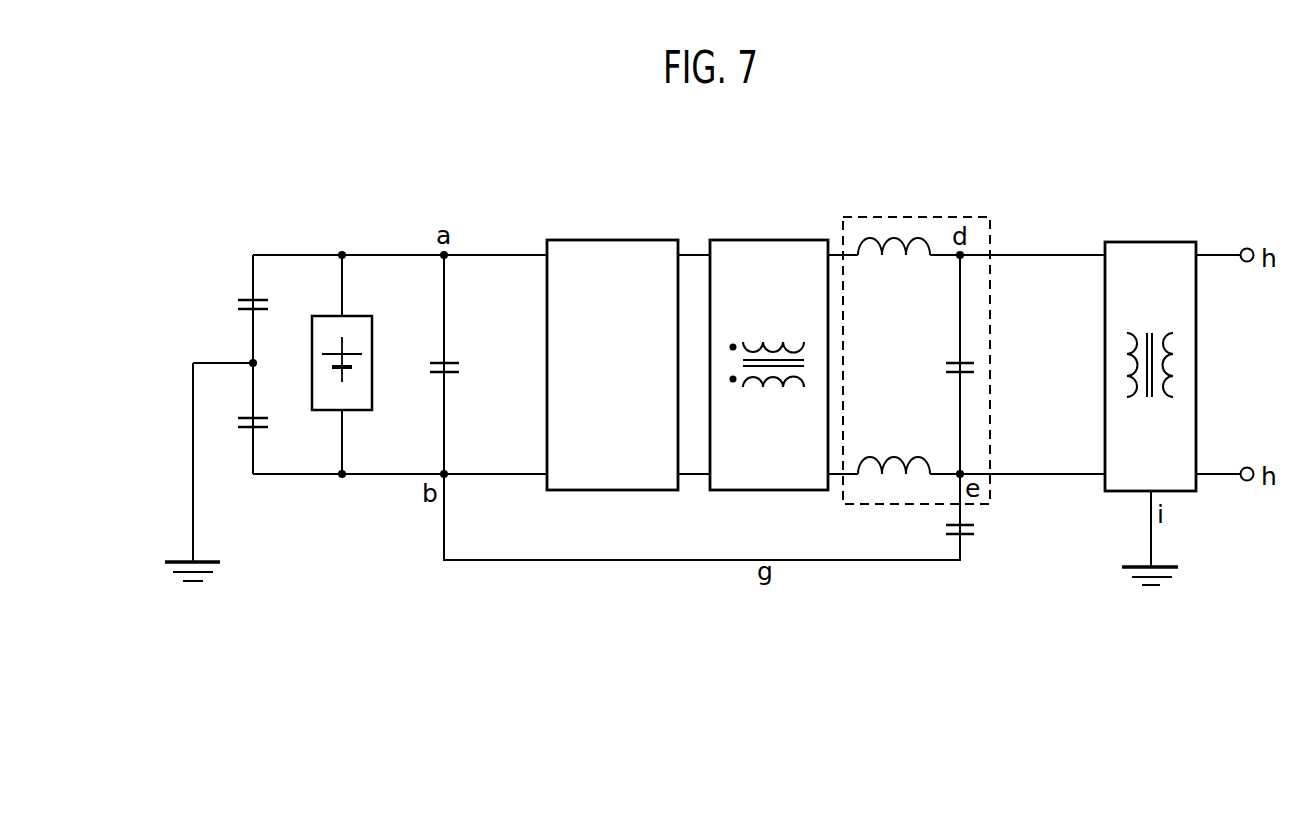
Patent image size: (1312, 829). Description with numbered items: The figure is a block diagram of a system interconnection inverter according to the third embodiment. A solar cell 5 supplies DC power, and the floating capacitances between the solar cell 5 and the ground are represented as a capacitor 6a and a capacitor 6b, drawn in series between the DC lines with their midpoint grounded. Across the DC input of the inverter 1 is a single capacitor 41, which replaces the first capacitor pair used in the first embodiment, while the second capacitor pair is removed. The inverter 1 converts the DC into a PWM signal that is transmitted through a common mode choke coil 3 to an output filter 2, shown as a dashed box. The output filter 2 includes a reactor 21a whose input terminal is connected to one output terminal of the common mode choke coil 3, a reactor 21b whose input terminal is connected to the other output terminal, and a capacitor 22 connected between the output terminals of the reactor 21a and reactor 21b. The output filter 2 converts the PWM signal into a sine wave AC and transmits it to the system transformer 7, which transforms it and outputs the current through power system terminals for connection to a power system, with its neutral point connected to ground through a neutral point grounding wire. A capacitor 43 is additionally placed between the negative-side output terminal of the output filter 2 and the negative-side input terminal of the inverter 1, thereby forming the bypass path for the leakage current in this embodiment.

The inverter 1 is at (620, 240).
The output filter 2 is at (965, 216).
The common mode choke coil 3 is at (780, 240).
The solar cell 5 is at (363, 315).
The capacitor 6a is at (243, 295).
The capacitor 6b is at (243, 432).
The system transformer 7 is at (1150, 241).
The reactor 21a is at (918, 238).
The reactor 21b is at (902, 458).
The capacitor 22 is at (967, 360).
The capacitor 41 is at (454, 361).
The capacitor 43 is at (980, 528).